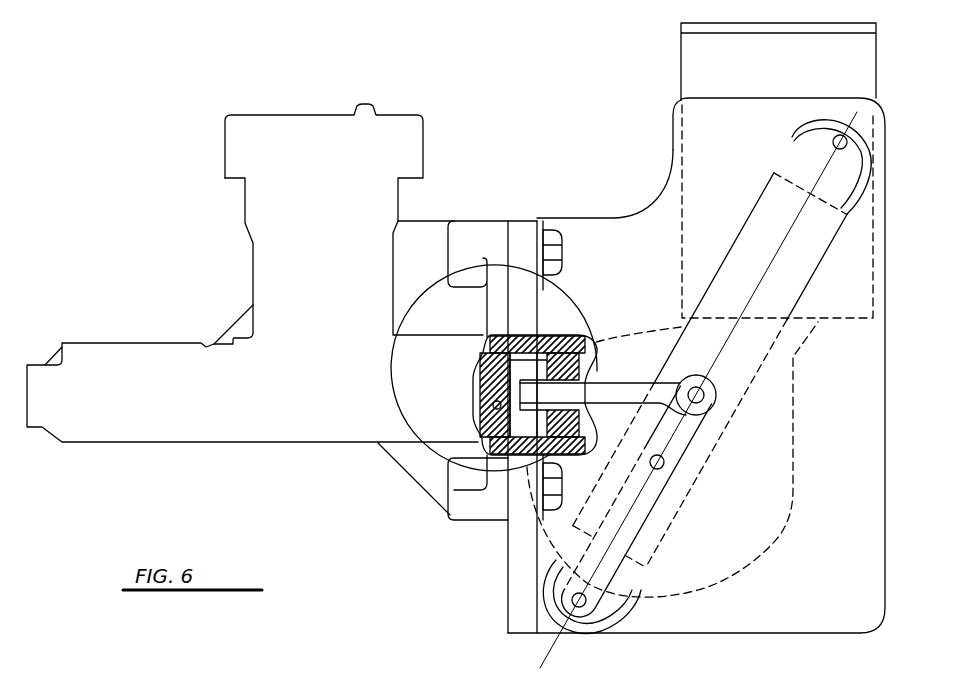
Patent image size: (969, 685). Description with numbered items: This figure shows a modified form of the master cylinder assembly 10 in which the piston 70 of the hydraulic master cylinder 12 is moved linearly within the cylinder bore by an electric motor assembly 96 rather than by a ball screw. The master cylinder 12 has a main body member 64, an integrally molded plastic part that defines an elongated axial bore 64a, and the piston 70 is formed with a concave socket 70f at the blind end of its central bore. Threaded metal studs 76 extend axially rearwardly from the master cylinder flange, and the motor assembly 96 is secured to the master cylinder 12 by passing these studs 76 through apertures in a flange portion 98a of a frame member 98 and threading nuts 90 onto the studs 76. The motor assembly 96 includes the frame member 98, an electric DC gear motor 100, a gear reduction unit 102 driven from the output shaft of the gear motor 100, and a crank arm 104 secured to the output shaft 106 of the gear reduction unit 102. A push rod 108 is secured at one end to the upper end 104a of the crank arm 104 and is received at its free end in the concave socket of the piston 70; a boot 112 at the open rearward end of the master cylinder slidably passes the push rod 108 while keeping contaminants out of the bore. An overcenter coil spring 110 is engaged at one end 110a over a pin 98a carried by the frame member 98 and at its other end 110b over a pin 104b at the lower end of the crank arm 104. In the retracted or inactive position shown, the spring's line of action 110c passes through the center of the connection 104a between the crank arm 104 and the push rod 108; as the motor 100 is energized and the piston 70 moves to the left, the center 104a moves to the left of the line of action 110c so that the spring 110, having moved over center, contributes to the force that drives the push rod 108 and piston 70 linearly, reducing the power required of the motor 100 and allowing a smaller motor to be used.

The master cylinder assembly 10 is at (243, 103).
The master cylinder 12 is at (159, 287).
The main body member 64 is at (222, 443).
The axial bore 64a is at (40, 430).
The piston 70 is at (508, 370).
The concave socket 70f is at (482, 381).
The threaded metal studs 76 is at (562, 253).
The nuts 90 is at (549, 227).
The electric motor assembly 96 is at (636, 166).
The frame member 98 is at (607, 217).
The pin / flange portion of frame member 98a is at (521, 232).
The electric DC gear motor 100 is at (681, 67).
The gear reduction unit 102 is at (760, 571).
The crank arm 104 is at (658, 528).
The upper end of crank arm 104a is at (714, 396).
The pin 104b is at (582, 609).
The output shaft 106 is at (664, 465).
The push rod 108 is at (635, 392).
The overcenter coil spring 110 is at (810, 303).
The one end of spring 110a is at (868, 164).
The other end of spring 110b is at (556, 592).
The line of action 110c is at (855, 240).
The boot 112 is at (570, 333).